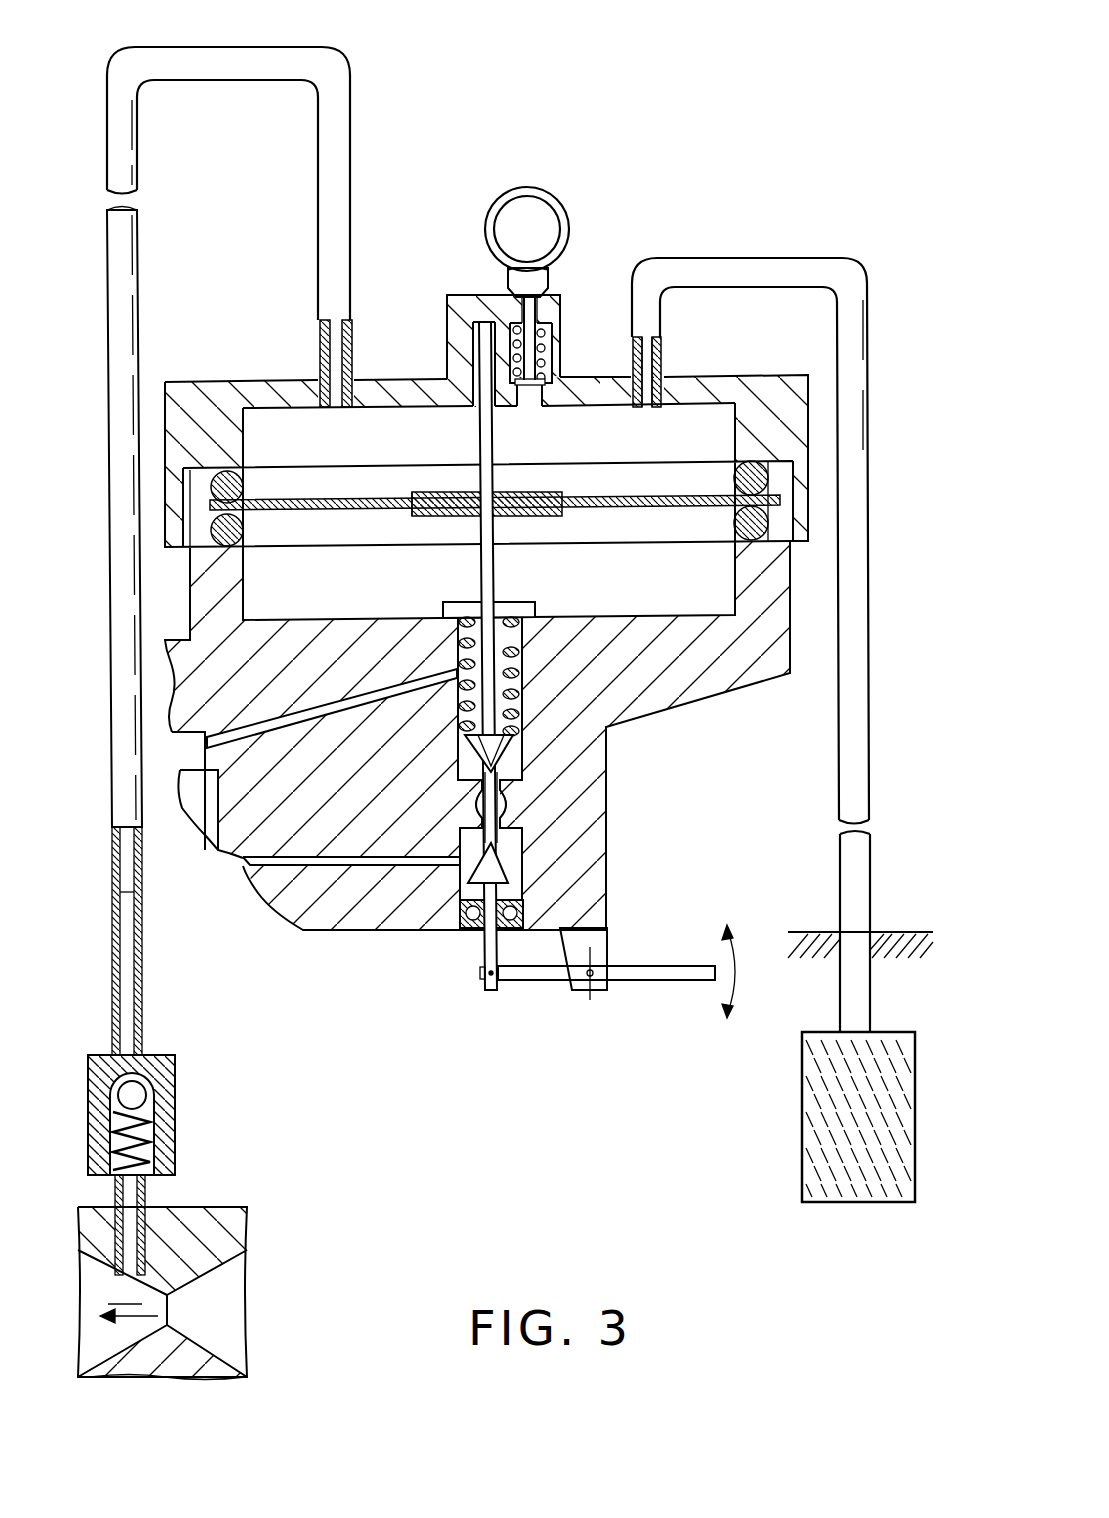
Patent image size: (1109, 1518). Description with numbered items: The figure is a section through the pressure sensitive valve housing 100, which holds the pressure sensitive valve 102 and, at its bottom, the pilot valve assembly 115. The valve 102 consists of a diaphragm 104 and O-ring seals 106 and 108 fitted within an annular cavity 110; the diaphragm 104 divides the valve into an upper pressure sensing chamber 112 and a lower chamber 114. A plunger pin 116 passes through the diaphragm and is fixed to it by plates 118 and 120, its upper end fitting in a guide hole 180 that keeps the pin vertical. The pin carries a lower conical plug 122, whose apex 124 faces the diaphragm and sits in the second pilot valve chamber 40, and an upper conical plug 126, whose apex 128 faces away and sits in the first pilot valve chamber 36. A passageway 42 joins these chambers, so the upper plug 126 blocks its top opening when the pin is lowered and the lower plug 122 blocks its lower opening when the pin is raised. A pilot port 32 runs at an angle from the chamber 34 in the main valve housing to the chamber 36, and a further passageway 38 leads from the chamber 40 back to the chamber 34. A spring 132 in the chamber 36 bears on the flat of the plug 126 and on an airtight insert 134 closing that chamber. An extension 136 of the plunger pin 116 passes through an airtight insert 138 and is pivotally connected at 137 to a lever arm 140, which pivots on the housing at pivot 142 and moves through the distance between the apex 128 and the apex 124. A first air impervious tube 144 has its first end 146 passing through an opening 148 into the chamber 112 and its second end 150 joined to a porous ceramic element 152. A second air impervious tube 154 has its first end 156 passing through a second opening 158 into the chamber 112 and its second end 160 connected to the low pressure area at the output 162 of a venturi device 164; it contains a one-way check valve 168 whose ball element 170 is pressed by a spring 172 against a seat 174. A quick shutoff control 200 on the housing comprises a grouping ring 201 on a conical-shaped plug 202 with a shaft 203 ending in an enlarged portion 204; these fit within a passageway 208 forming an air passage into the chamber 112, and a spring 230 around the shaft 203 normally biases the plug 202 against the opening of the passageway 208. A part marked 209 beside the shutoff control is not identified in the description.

The pilot port 32 is at (356, 704).
The chamber 34 is at (203, 799).
The cylindrical pilot valve chamber 36 is at (522, 712).
The further passageway 38 is at (303, 928).
The second cylindrical pilot valve chamber 40 is at (470, 870).
The passageway 42 is at (504, 815).
The pressure sensitive valve housing 100 is at (202, 366).
The pressure sensitive valve 102 is at (386, 500).
The diaphragm 104 is at (658, 509).
The O-ring seal 106 is at (750, 462).
The O-ring seal 108 is at (770, 540).
The annular cavity 110 is at (225, 473).
The upper pressure sensing chamber 112 is at (667, 449).
The lower chamber 114 is at (337, 601).
The pilot valve assembly 115 is at (465, 740).
The plunger pin 116 is at (490, 405).
The plate 118 is at (455, 496).
The plate 120 is at (440, 520).
The lower conical plug 122 is at (505, 858).
The apex 124 is at (455, 845).
The second conical plug 126 is at (515, 756).
The apex 128 is at (505, 786).
The spring 132 is at (522, 663).
The airtight insert 134 is at (540, 605).
The extension 136 is at (483, 981).
The pivotal connection 137 is at (482, 980).
The airtight insert 138 is at (462, 938).
The lever arm 140 is at (560, 983).
The pivot 142 is at (600, 992).
The first air impervious tube 144 is at (808, 262).
The first end 146 is at (634, 402).
The opening 148 is at (665, 352).
The second end 150 is at (865, 1000).
The porous ceramic element 152 is at (850, 1203).
The second air impervious tube 154 is at (268, 80).
The first end 156 is at (345, 410).
The second opening 158 is at (322, 355).
The second end 160 is at (172, 1268).
The output 162 is at (195, 1321).
The venturi device 164 is at (245, 1375).
The one-way check valve 168 is at (190, 1098).
The ball element 170 is at (152, 1120).
The spring 172 is at (158, 1168).
The seat 174 is at (140, 1092).
The guide hole 180 is at (449, 305).
The quick shutoff control 200 is at (499, 158).
The grouping ring 201 is at (545, 190).
The conical-shaped plug 202 is at (505, 286).
The shaft 203 is at (550, 325).
The enlarged portion 204 is at (555, 364).
The passageway 208 is at (540, 395).
The boss wall 209 is at (555, 312).
The spring 230 is at (553, 298).